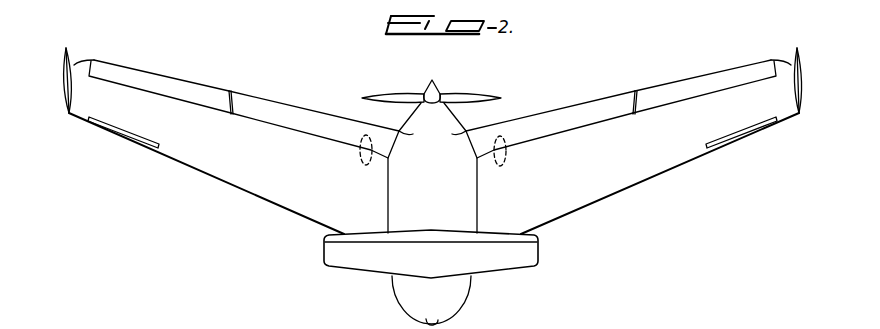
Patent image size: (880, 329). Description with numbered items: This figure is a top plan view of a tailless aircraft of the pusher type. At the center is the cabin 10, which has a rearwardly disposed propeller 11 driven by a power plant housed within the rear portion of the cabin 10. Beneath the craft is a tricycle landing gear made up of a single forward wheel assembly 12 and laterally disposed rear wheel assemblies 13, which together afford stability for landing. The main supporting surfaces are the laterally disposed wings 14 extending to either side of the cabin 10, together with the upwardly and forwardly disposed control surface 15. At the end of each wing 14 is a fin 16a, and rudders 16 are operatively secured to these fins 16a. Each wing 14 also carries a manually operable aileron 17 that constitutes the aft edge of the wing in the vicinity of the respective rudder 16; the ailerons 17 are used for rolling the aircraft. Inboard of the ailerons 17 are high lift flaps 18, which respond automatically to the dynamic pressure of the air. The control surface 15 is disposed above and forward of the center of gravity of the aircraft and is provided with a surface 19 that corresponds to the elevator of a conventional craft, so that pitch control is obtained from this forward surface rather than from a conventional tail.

The cabin 10 is at (453, 292).
The propeller 11 is at (470, 93).
The forward wheel assembly 12 is at (440, 322).
The rear wheel assembly 13 is at (362, 138).
The wing 14 is at (265, 169).
The control surface 15 is at (446, 267).
The rudder 16 is at (63, 59).
The fin 16a is at (63, 100).
The aileron 17 is at (159, 78).
The high lift flap 18 is at (258, 110).
The surface corresponding to elevator 19 is at (450, 234).